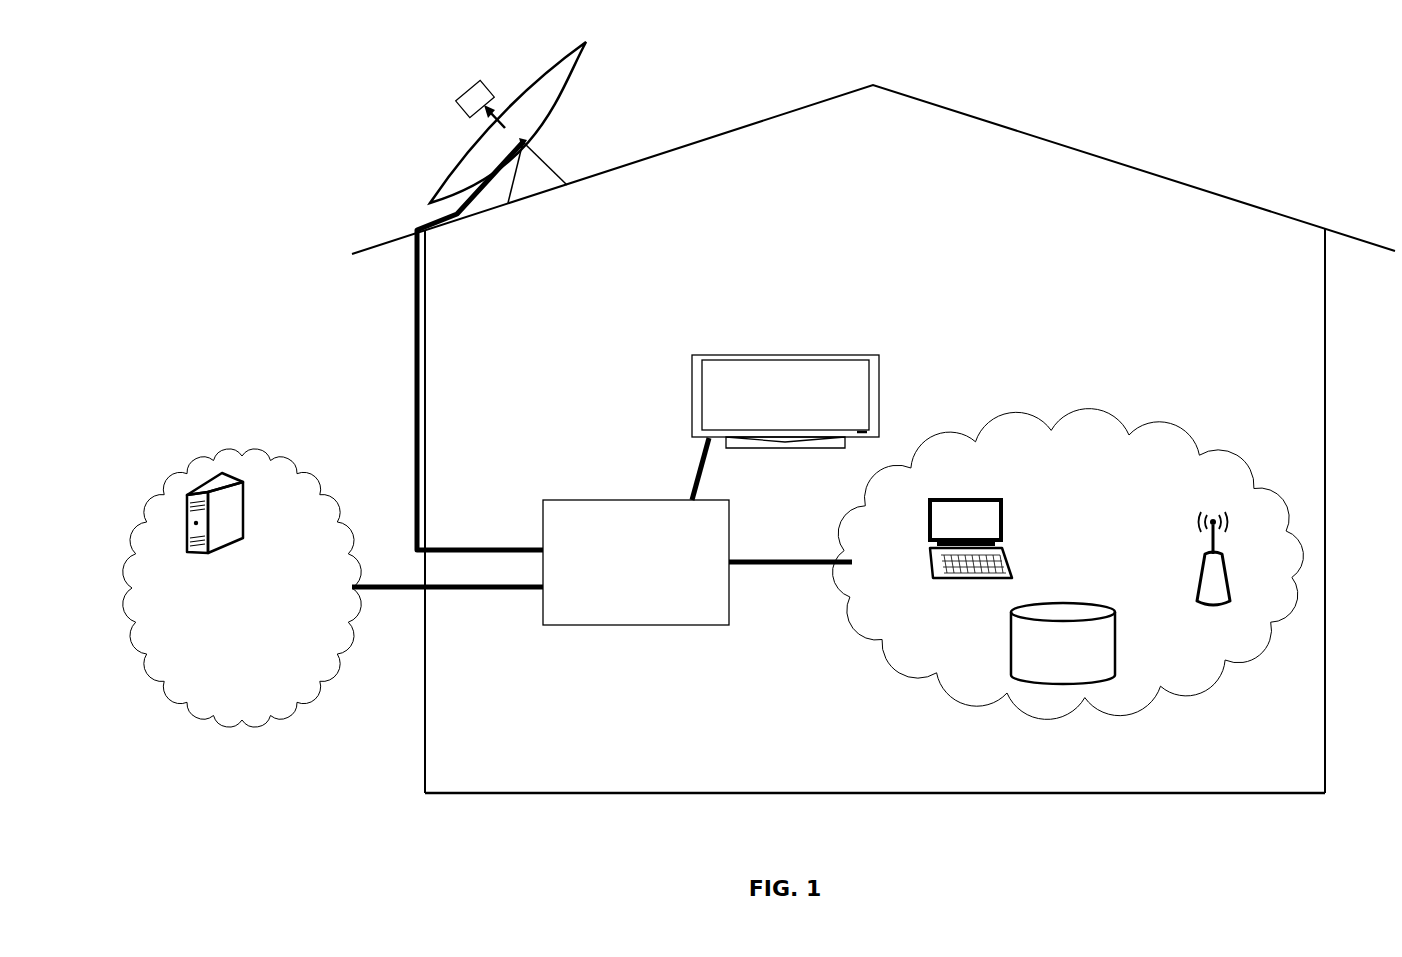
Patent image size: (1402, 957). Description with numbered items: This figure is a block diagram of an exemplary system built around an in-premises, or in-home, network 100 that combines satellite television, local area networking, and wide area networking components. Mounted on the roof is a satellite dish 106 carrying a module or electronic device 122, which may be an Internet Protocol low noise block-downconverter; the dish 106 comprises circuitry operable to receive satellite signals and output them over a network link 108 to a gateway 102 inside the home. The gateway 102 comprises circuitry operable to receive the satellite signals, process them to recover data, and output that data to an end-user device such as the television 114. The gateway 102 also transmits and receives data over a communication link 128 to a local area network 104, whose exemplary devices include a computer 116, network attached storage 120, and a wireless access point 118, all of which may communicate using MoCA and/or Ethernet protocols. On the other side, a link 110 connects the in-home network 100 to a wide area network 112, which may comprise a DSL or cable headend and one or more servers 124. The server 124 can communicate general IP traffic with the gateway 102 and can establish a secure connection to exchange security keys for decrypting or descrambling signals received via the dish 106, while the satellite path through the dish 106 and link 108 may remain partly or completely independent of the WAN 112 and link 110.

The in-premises network 100 is at (1150, 287).
The gateway 102 is at (636, 562).
The local area network 104 is at (1068, 564).
The satellite dish 106 is at (557, 66).
The network link 108 is at (412, 343).
The link 110 is at (393, 585).
The wide area network 112 is at (242, 588).
The television 114 is at (710, 355).
The computer 116 is at (949, 498).
The wireless access point 118 is at (1230, 576).
The network attached storage 120 is at (1063, 643).
The electronic device 122 is at (461, 89).
The server 124 is at (246, 512).
The communication link 128 is at (786, 560).